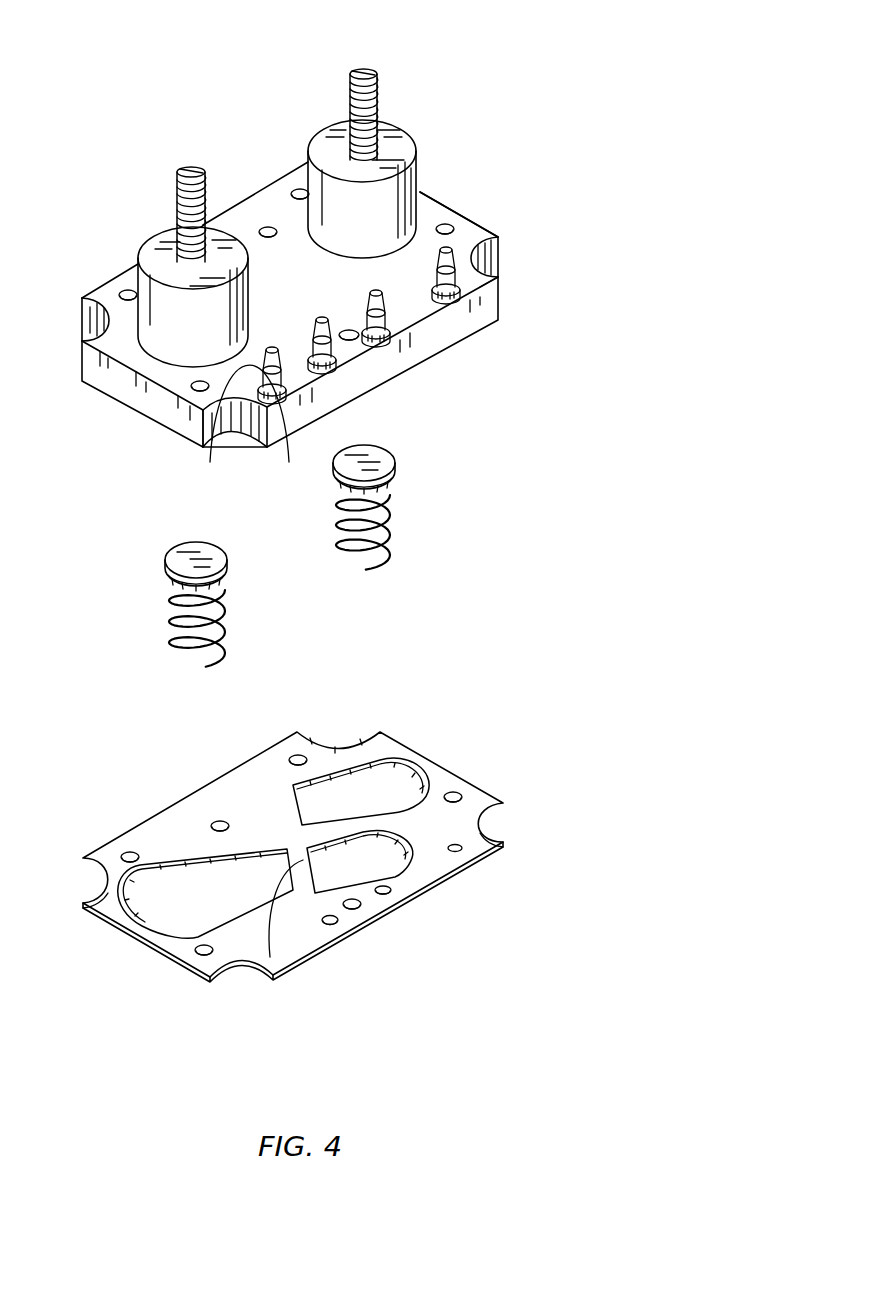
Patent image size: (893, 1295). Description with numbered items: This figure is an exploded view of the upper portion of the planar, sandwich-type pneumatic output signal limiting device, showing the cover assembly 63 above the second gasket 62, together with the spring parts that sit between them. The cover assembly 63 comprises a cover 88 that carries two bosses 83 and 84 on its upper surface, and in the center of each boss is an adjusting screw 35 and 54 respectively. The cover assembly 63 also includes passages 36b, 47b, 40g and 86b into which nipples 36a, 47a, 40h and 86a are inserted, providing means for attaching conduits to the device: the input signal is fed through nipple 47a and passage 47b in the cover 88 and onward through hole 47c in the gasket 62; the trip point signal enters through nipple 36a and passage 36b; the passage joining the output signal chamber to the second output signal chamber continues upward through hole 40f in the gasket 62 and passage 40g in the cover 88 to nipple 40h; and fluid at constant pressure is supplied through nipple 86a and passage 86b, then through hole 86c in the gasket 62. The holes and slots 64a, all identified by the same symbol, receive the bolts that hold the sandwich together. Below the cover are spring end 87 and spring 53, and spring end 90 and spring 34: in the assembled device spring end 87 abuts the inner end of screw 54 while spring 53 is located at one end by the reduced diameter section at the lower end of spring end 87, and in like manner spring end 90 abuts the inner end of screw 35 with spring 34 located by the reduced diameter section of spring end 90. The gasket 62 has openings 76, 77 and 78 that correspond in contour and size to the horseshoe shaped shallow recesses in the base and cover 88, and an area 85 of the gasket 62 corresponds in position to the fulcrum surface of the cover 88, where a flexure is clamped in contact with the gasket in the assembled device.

The spring 34 is at (172, 607).
The adjusting screw 35 is at (187, 168).
The nipple 36a is at (212, 448).
The passage 36b is at (287, 448).
The hole 40f is at (390, 893).
The passage 40g is at (382, 293).
The nipple 40h is at (458, 303).
The nipple 47a is at (333, 340).
The passage 47b is at (332, 371).
The hole 47c is at (331, 928).
The spring 53 is at (390, 510).
The adjusting screw 54 is at (378, 95).
The second gasket 62 is at (143, 943).
The cover assembly 63 is at (96, 408).
The holes and slots 64a is at (293, 192).
The opening 76 is at (387, 787).
The opening 77 is at (387, 862).
The opening 78 is at (147, 890).
The boss 83 is at (157, 250).
The boss 84 is at (403, 147).
The area 85 is at (270, 957).
The nipple 86a is at (490, 243).
The passage 86b is at (495, 277).
The hole 86c is at (462, 850).
The spring end 87 is at (385, 467).
The cover 88 is at (450, 212).
The spring end 90 is at (168, 555).